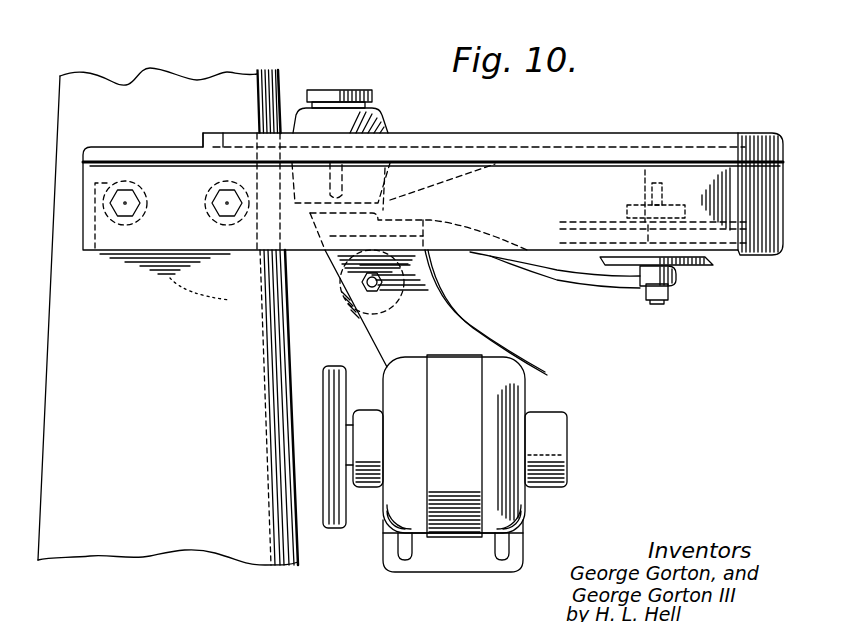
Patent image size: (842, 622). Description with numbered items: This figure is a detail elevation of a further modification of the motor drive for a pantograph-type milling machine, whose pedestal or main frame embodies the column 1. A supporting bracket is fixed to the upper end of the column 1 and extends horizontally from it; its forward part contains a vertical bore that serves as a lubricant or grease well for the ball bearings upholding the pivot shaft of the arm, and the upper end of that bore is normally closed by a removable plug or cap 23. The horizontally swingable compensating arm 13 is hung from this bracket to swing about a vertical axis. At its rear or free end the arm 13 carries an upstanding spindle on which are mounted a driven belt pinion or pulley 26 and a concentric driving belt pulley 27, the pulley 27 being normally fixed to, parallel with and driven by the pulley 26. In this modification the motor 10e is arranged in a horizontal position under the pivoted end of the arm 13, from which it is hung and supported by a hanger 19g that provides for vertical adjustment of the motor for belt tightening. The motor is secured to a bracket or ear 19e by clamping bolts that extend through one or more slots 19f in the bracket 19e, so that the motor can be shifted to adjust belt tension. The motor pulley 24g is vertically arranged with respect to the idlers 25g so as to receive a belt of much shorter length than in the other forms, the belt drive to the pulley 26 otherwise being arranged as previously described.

The column 1 is at (222, 87).
The removable plug or cap 23 is at (352, 90).
The driving belt pulley 27 is at (568, 221).
The driven belt pinion or pulley 26 is at (706, 268).
The compensating arm 13 is at (587, 288).
The hanger 19g is at (445, 328).
The idlers 25g is at (342, 298).
The motor pulley 24g is at (350, 356).
The motor 10e is at (475, 446).
The bracket or ear 19e is at (453, 563).
The slots 19f is at (405, 554).